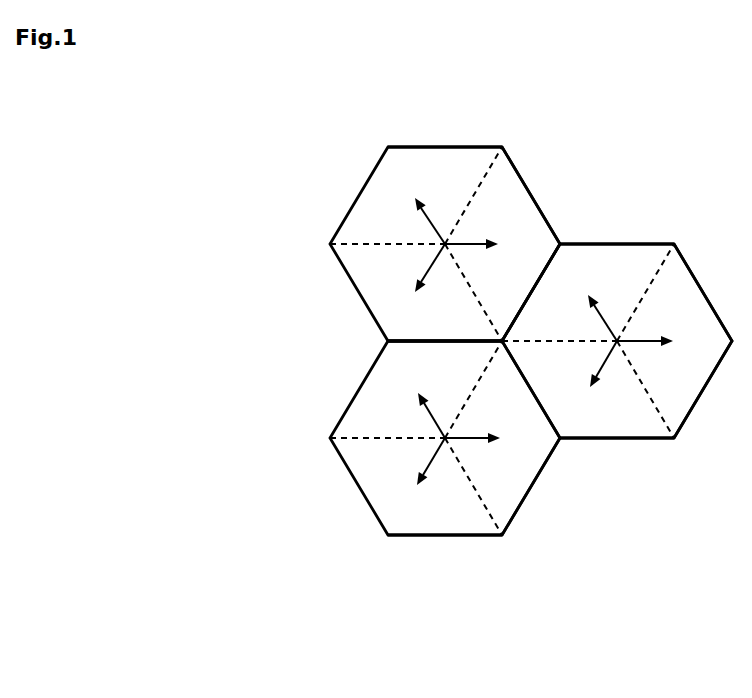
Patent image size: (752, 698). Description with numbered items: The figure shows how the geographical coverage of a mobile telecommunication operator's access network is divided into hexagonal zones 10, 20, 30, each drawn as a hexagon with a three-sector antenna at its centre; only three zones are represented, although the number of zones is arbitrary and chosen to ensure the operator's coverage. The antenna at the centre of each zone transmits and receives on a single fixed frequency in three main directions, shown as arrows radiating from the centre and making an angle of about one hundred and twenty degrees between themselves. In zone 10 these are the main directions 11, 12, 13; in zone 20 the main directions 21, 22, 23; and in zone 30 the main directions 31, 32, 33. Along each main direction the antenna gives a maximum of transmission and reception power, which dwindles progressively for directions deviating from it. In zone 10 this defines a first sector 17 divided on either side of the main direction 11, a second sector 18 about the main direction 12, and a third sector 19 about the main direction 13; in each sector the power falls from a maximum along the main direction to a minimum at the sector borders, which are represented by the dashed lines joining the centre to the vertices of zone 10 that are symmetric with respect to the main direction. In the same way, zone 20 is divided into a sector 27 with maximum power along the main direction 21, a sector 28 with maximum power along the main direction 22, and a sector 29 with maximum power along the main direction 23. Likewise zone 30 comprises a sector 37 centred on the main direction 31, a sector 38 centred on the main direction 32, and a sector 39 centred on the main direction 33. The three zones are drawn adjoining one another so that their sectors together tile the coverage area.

The zone 10 is at (390, 147).
The main direction 11 is at (430, 267).
The main direction 12 is at (428, 227).
The main direction 13 is at (470, 240).
The first sector 17 is at (408, 325).
The second sector 18 is at (408, 177).
The third sector 19 is at (533, 245).
The zone 20 is at (393, 535).
The main direction 21 is at (432, 455).
The main direction 22 is at (432, 420).
The main direction 23 is at (472, 442).
The sector 27 is at (420, 520).
The sector 28 is at (418, 378).
The sector 29 is at (532, 492).
The zone 30 is at (705, 393).
The main direction 31 is at (608, 362).
The main direction 32 is at (610, 313).
The main direction 33 is at (650, 342).
The sector 37 is at (572, 373).
The sector 38 is at (647, 267).
The sector 39 is at (699, 320).